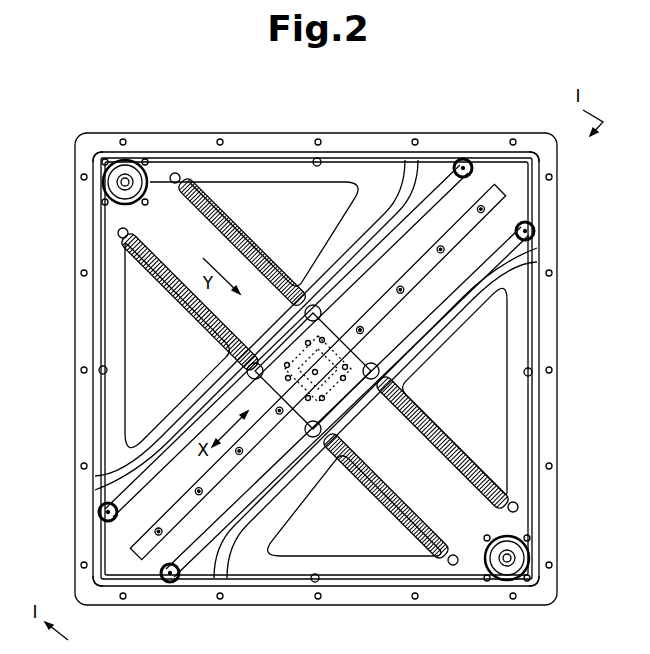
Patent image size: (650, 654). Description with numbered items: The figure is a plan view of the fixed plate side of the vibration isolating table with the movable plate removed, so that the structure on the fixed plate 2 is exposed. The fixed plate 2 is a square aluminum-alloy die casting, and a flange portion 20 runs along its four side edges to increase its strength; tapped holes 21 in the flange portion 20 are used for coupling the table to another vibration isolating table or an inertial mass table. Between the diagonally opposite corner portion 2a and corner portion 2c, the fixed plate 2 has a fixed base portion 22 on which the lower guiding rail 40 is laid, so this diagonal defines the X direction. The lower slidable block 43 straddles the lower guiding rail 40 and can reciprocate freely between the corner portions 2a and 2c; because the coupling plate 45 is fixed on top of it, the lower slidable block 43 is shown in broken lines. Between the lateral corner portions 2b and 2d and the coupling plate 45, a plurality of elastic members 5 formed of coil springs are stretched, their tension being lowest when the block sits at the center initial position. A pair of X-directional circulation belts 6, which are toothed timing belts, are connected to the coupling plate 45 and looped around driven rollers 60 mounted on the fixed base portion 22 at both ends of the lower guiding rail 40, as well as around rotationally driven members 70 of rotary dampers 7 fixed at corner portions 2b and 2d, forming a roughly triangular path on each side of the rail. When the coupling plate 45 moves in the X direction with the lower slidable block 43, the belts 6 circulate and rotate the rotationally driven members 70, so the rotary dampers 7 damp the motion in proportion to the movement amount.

The fixed plate 2 is at (560, 192).
The corner portion 2a is at (103, 563).
The corner portion 2b is at (535, 575).
The corner portion 2c is at (525, 163).
The corner portion 2d is at (106, 157).
The elastic member 5 is at (240, 228).
The X-directional circulation belt 6 is at (347, 157).
The rotary damper 7 is at (113, 178).
The flange portion 20 is at (533, 244).
The tapped hole 21 is at (220, 138).
The fixed base portion 22 is at (410, 313).
The lower guiding rail 40 is at (413, 277).
The lower slidable block 43 is at (335, 385).
The coupling plate 45 is at (305, 432).
The driven roller 60 is at (463, 158).
The rotationally driven member 70 is at (105, 178).